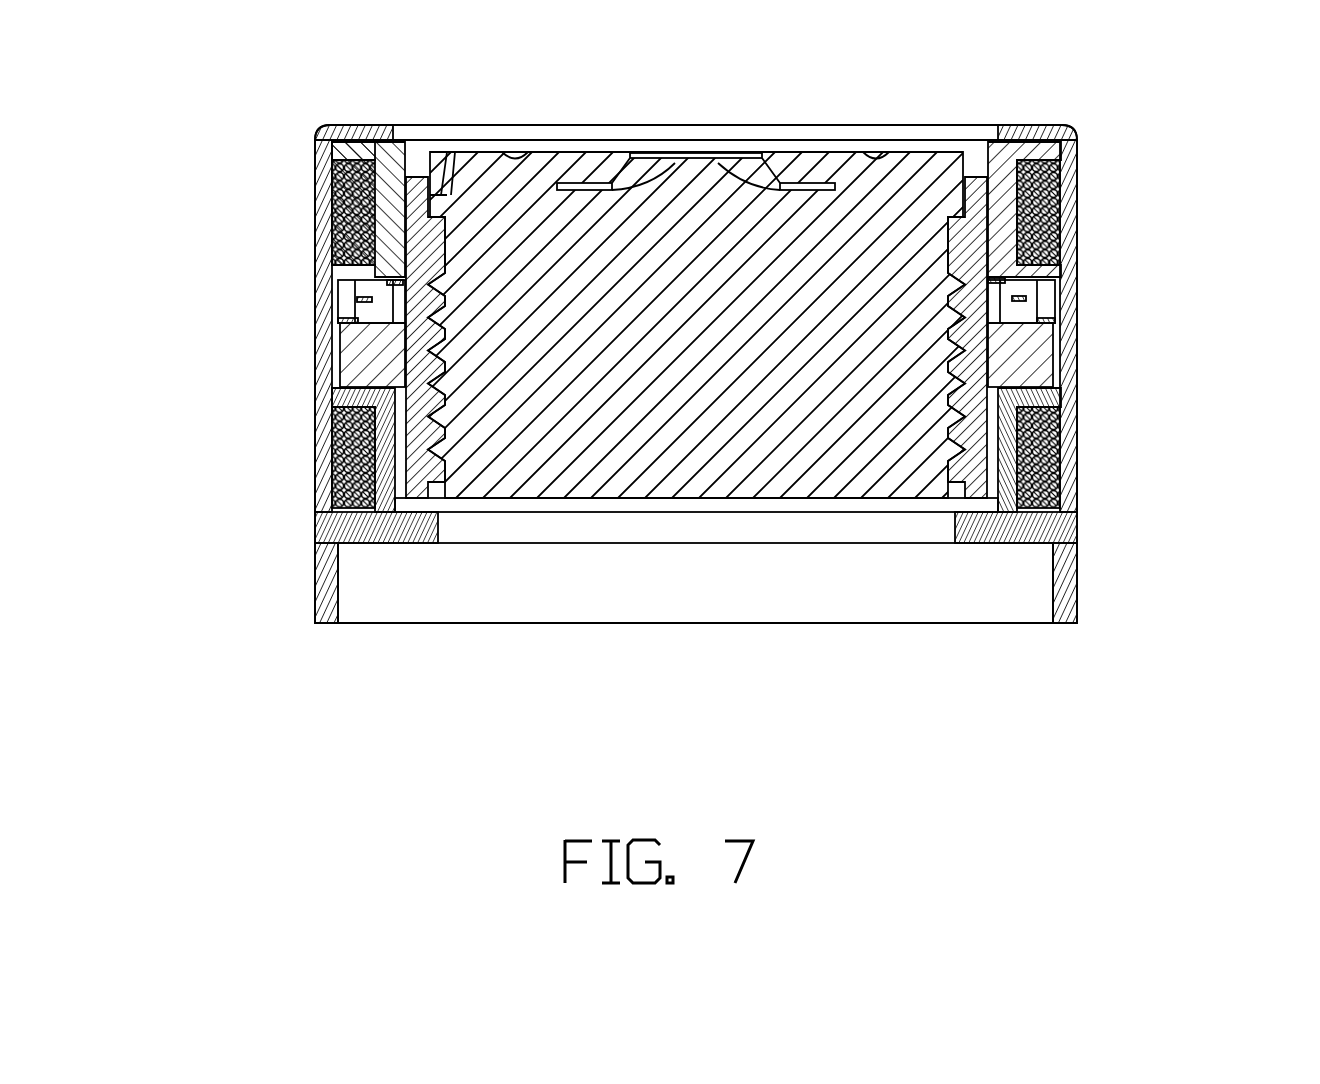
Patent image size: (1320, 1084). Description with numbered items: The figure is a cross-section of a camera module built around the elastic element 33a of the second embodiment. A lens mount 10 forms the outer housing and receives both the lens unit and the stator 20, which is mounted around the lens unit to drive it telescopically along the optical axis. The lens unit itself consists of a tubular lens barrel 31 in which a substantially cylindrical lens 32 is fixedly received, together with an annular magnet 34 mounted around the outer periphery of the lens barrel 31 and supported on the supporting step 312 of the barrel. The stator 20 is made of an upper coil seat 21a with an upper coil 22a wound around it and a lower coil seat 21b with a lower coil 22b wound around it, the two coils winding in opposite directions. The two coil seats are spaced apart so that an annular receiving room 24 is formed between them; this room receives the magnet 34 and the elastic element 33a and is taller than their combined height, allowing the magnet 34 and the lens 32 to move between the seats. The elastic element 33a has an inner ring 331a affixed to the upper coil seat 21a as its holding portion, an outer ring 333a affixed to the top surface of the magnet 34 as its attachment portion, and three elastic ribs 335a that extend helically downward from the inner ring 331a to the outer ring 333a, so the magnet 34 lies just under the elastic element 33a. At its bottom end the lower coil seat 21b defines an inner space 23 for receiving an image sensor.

The lens mount 10 is at (1015, 123).
The stator 20 is at (193, 142).
The upper coil seat 21a is at (348, 150).
The lower coil seat 21b is at (363, 396).
The upper coil 22a is at (367, 170).
The lower coil 22b is at (362, 508).
The inner space 23 is at (625, 573).
The receiving room 24 is at (373, 312).
The lens barrel 31 is at (975, 178).
The lens 32 is at (903, 170).
The elastic element 33a is at (1193, 192).
The inner ring 331a is at (997, 283).
The outer ring 333a is at (1048, 320).
The elastic ribs 335a is at (1027, 298).
The magnet 34 is at (1043, 353).
The supporting step 312 is at (1003, 387).